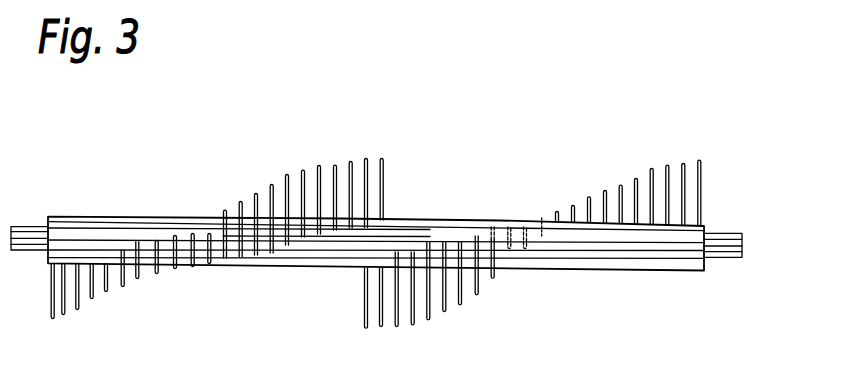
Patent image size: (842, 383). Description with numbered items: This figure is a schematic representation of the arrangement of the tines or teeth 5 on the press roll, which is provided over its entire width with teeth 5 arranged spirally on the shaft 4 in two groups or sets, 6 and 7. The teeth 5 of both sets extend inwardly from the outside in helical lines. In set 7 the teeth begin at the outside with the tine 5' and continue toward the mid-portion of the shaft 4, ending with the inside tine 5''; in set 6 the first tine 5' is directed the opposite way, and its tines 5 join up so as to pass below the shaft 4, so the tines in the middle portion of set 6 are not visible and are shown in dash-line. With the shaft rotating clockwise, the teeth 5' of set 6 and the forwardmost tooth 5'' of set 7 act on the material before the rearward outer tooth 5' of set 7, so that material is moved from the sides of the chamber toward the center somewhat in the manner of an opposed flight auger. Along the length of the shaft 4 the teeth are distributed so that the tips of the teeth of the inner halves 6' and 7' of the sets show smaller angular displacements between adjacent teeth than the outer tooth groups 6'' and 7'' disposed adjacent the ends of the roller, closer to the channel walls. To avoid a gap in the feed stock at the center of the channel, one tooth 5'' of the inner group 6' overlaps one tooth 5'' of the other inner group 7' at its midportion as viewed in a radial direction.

The shaft 4 is at (628, 272).
The teeth 5 is at (407, 211).
The outside tine 5' is at (380, 245).
The inside tine 5'' is at (381, 246).
The first set of teeth 6 is at (525, 210).
The inner half of set 6 6' is at (460, 289).
The outer tooth group of set 6 6'' is at (612, 179).
The second set of teeth 7 is at (183, 278).
The inner half of set 7 7' is at (287, 190).
The outer tooth group of set 7 7'' is at (124, 292).